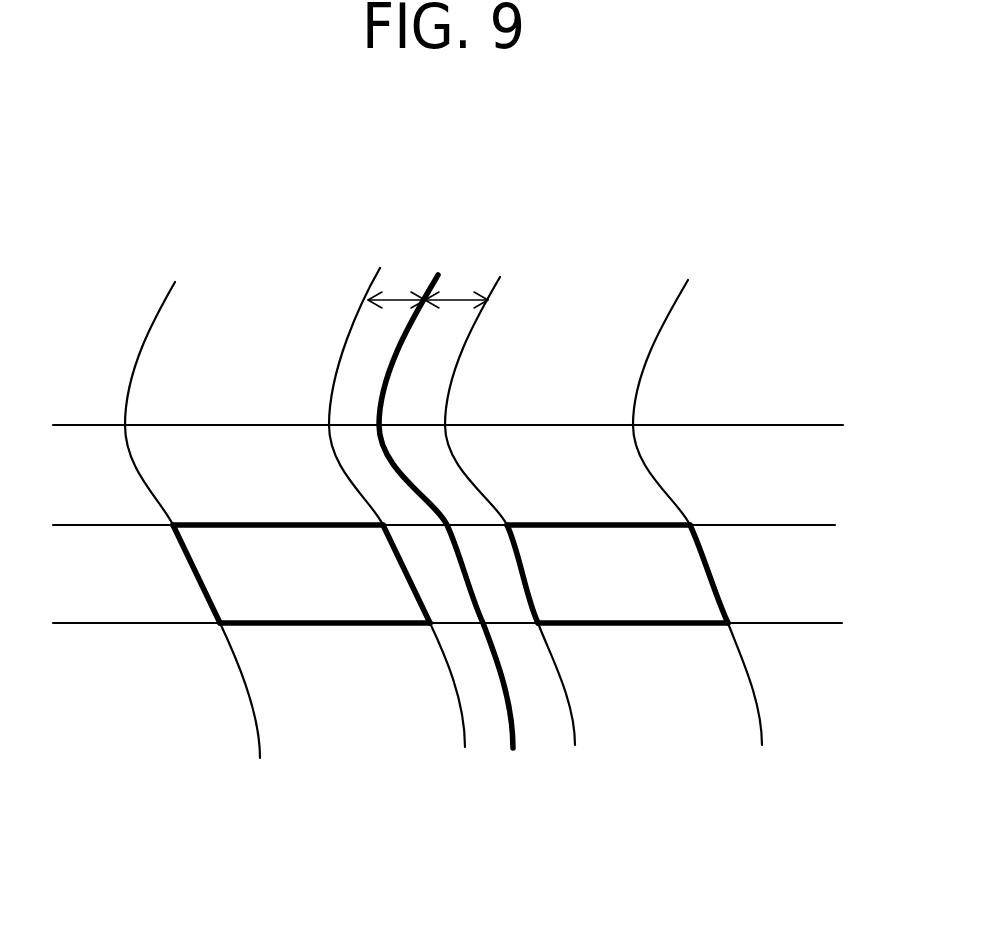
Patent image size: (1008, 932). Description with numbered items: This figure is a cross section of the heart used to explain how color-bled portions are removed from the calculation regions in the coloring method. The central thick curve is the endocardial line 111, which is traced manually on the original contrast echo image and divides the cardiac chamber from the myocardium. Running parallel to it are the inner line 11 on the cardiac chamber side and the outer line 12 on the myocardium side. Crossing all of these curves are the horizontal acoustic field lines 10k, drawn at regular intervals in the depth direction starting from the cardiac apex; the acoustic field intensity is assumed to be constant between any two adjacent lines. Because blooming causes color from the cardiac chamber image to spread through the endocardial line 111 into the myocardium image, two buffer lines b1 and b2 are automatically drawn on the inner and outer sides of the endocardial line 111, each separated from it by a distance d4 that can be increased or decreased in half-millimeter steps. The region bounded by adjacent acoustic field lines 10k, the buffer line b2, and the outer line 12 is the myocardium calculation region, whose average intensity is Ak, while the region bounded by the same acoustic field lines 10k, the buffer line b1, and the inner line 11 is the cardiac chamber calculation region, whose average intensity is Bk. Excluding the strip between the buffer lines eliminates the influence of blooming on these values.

The acoustic field line 10k is at (467, 615).
The outer line 12 is at (199, 542).
The inner line 11 is at (704, 539).
The buffer line b2 is at (402, 531).
The buffer line b1 is at (517, 535).
The endocardial line 111 is at (459, 534).
The average intensity of myocardium calculation region Ak is at (301, 574).
The average intensity of cardiac chamber calculation region Bk is at (617, 574).
The distance d4 is at (428, 282).